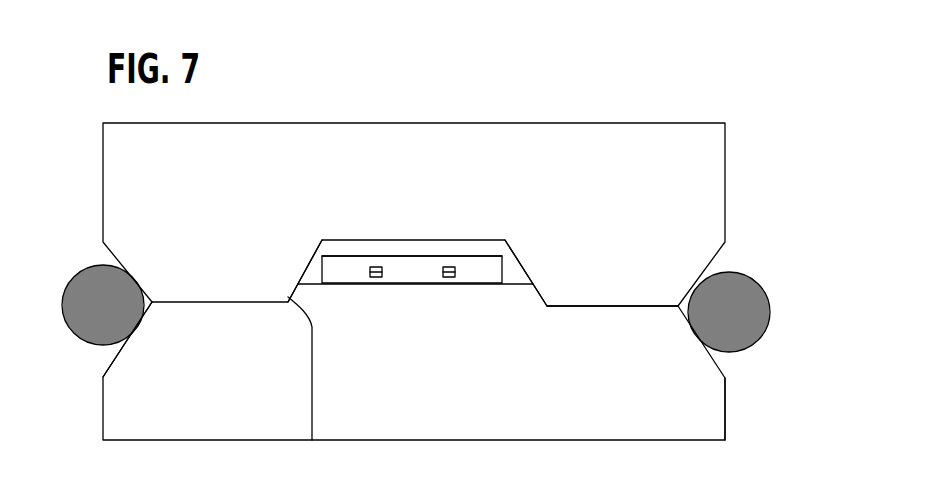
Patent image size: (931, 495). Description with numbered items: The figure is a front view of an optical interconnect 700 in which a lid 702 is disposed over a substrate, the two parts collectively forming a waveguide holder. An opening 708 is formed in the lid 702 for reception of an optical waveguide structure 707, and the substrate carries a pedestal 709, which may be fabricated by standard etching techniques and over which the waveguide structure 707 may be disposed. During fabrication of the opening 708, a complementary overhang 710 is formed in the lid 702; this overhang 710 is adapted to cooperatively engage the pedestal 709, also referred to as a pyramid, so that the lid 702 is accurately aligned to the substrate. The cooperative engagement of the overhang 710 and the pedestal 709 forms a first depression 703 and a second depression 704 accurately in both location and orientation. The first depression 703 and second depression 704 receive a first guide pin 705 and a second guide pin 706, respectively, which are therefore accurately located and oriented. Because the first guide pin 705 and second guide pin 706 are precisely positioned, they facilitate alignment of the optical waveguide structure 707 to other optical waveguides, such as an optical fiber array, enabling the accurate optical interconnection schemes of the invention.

The optical interconnect 700 is at (45, 138).
The lid 702 is at (726, 137).
The first depression 703 is at (716, 366).
The second depression 704 is at (112, 362).
The first guide pin 705 is at (760, 288).
The second guide pin 706 is at (66, 308).
The optical waveguide structure 707 is at (493, 268).
The opening 708 is at (450, 252).
The pedestal 709 is at (527, 295).
The complementary overhang 710 is at (540, 301).